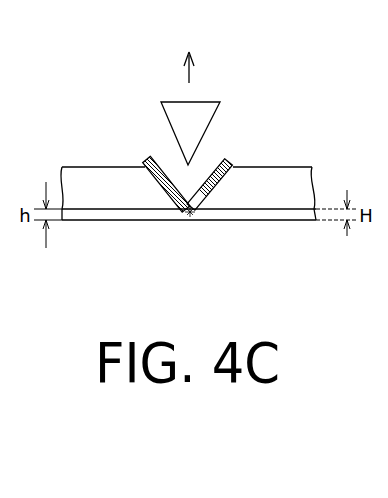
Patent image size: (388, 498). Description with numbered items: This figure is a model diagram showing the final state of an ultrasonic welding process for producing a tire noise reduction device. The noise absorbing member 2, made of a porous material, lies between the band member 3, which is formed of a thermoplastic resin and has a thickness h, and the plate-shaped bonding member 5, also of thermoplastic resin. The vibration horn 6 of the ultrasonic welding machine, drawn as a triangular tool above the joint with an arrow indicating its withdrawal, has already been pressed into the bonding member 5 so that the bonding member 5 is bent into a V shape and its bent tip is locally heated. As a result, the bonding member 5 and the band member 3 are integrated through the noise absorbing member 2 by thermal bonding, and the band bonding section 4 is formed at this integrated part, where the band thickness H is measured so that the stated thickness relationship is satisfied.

The noise absorbing member 2 is at (277, 173).
The band member 3 is at (115, 221).
The band bonding section 4 is at (195, 214).
The bonding member 5 is at (161, 165).
The vibration horn 6 is at (206, 108).